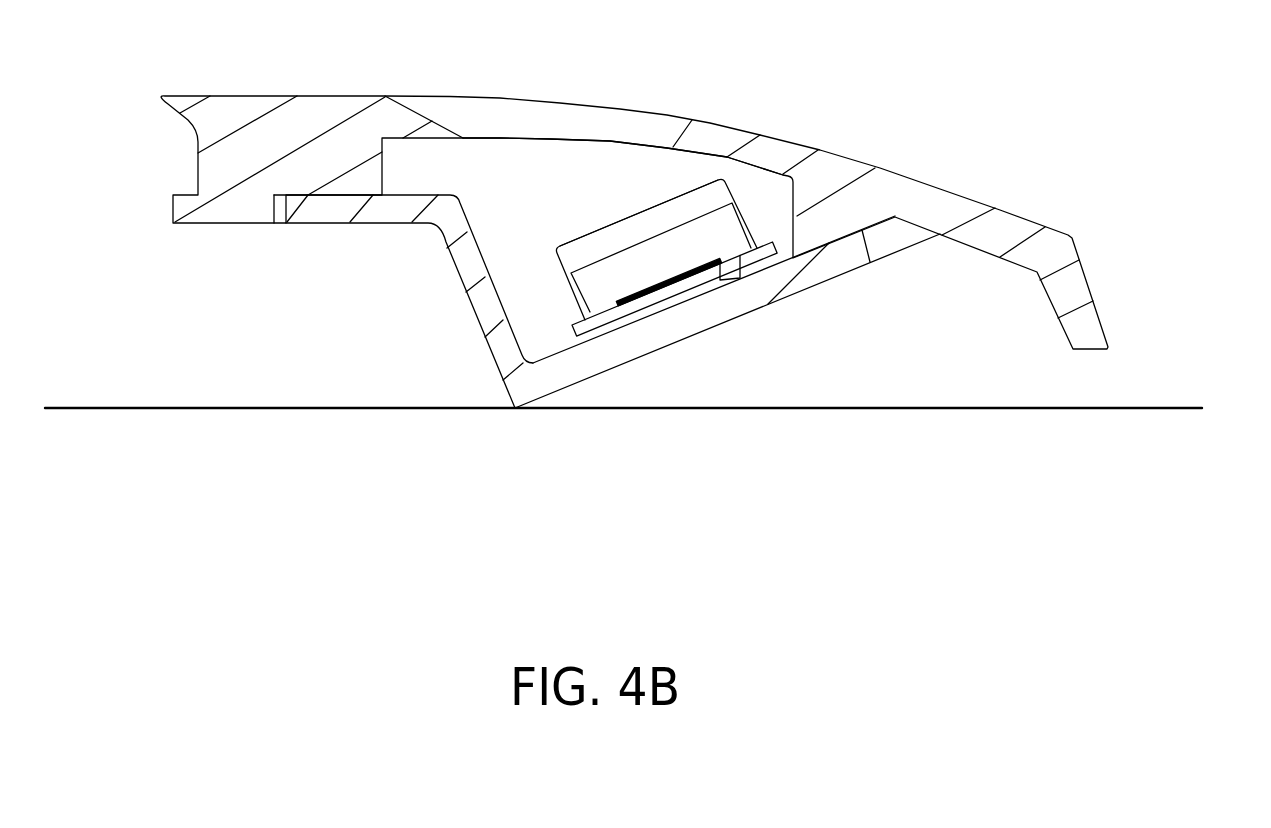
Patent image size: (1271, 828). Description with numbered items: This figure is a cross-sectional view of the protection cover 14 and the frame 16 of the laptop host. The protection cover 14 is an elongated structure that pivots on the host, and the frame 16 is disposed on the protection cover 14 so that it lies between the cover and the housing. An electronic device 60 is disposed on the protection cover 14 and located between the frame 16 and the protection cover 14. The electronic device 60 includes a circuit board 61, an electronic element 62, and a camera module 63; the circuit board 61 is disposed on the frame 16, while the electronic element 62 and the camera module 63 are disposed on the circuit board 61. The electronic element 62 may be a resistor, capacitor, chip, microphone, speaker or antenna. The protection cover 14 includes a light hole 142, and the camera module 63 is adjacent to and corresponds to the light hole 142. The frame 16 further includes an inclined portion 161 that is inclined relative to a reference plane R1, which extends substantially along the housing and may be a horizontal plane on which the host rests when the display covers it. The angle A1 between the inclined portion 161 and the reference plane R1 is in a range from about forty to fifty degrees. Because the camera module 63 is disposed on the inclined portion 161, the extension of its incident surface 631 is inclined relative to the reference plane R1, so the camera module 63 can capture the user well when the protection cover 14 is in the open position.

The protection cover 14 is at (190, 102).
The light hole 142 is at (570, 115).
The frame 16 is at (456, 318).
The inclined portion 161 is at (840, 263).
The electronic device 60 is at (666, 271).
The circuit board 61 is at (733, 265).
The electronic element 62 is at (677, 258).
The camera module 63 is at (618, 235).
The incident surface 631 is at (655, 198).
The angle A1 is at (563, 398).
The reference plane R1 is at (1175, 407).